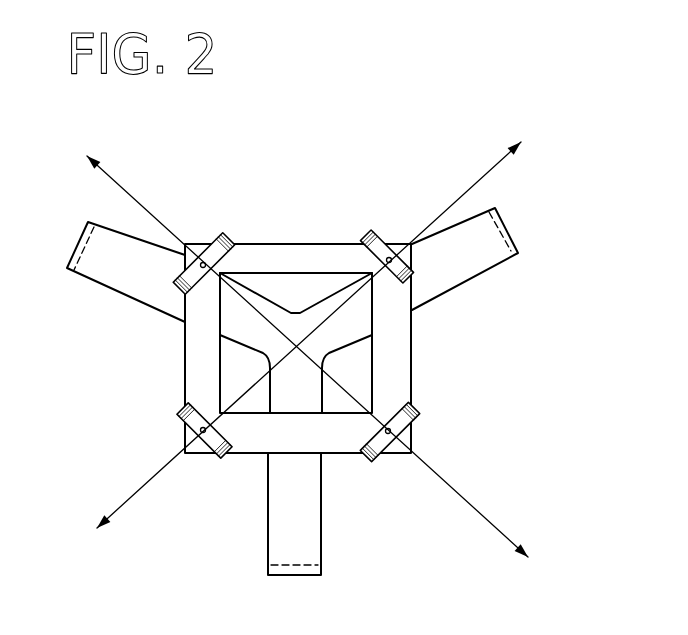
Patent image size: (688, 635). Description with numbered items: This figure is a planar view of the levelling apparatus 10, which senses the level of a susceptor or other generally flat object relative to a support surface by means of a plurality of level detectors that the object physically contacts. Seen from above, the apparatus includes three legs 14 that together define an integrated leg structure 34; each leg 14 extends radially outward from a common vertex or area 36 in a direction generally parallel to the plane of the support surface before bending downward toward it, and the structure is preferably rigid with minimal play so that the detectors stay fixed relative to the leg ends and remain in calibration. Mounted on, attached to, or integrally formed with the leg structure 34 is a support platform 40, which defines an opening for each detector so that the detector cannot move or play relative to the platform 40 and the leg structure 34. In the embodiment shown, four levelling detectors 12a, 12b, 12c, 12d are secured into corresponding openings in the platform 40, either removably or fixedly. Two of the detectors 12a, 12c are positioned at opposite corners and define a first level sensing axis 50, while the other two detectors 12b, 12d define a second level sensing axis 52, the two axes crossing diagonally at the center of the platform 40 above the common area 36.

The levelling apparatus 10 is at (580, 152).
The levelling detector 12a is at (224, 236).
The levelling detector 12b is at (380, 232).
The levelling detector 12c is at (422, 408).
The levelling detector 12d is at (217, 459).
The leg 14 is at (102, 228).
The integrated leg structure 34 is at (110, 316).
The common vertex 36 is at (295, 325).
The support platform 40 is at (293, 245).
The first level sensing axis 50 is at (491, 521).
The second level sensing axis 52 is at (477, 181).